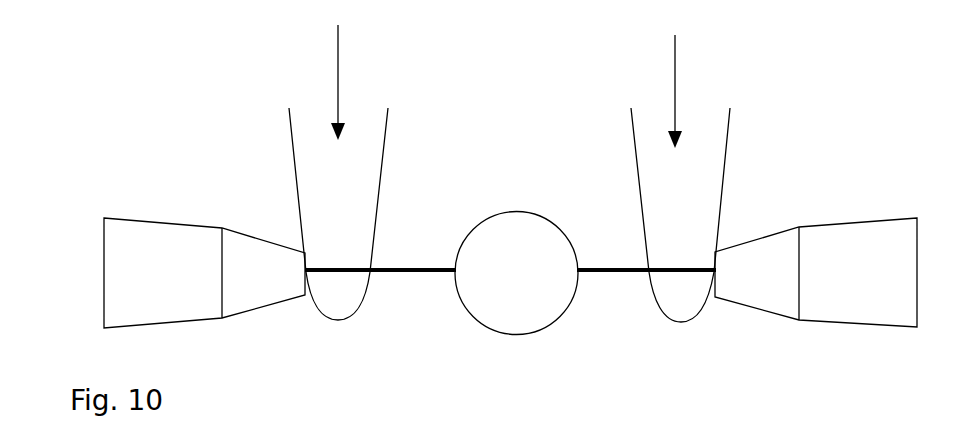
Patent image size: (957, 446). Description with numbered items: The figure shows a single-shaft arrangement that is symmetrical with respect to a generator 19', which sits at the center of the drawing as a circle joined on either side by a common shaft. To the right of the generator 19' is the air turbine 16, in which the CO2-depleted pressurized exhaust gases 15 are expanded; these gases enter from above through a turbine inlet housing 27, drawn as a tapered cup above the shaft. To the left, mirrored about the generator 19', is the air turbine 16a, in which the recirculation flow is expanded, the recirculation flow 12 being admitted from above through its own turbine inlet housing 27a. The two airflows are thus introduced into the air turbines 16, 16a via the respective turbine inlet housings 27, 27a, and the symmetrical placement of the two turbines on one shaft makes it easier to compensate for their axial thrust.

The first inlet flow 12 is at (357, 82).
The CO2-depleted pressurized exhaust gases 15 is at (694, 91).
The turbine inlet housing 27a is at (338, 214).
The turbine inlet housing 27 is at (680, 215).
The generator 19' is at (516, 273).
The air turbine 16a is at (204, 273).
The air turbine 16 is at (816, 272).